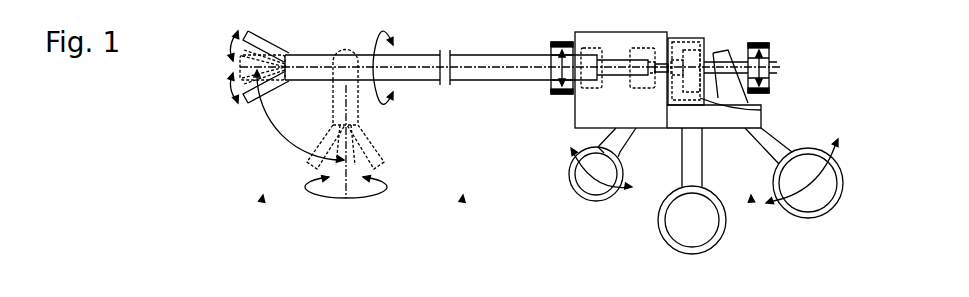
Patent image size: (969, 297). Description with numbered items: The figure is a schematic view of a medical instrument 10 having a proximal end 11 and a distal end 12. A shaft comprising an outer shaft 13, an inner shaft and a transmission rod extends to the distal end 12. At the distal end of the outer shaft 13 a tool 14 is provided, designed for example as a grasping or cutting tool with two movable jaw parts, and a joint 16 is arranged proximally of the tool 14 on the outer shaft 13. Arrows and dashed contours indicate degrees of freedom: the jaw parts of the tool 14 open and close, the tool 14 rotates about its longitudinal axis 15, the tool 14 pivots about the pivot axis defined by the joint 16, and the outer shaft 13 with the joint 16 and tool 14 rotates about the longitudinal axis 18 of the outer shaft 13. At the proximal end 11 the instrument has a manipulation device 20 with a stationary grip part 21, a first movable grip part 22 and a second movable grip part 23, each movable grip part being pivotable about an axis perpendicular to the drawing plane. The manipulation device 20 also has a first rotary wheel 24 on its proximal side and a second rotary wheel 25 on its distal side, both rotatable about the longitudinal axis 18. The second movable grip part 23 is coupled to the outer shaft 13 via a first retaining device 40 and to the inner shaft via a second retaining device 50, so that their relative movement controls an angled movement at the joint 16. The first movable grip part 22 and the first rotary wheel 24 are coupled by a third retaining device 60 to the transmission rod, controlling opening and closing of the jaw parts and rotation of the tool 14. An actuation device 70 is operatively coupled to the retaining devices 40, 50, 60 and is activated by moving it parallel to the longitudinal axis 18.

The medical instrument 10 is at (462, 198).
The proximal end 11 is at (751, 198).
The distal end 12 is at (262, 198).
The outer shaft 13 is at (415, 81).
The tool 14 is at (303, 81).
The longitudinal axis 15 is at (348, 108).
The joint 16 is at (345, 69).
The longitudinal axis 18 is at (470, 68).
The manipulation device 20 is at (577, 121).
The stationary grip part 21 is at (660, 233).
The first movable grip part 22 is at (822, 218).
The second movable grip part 23 is at (570, 186).
The first rotary wheel 24 is at (769, 73).
The second rotary wheel 25 is at (553, 83).
The first retaining device 40 is at (588, 89).
The second retaining device 50 is at (640, 89).
The third retaining device 60 is at (675, 88).
The actuation device 70 is at (761, 110).